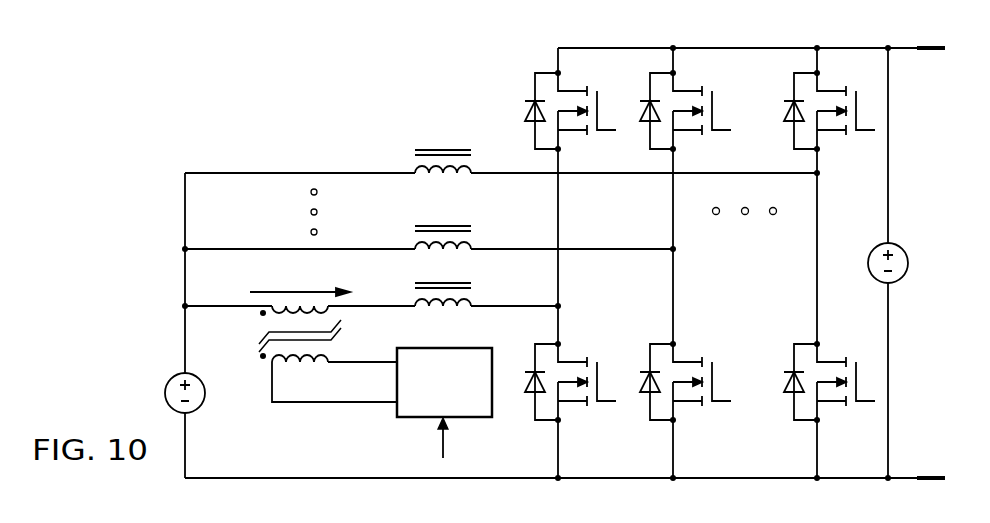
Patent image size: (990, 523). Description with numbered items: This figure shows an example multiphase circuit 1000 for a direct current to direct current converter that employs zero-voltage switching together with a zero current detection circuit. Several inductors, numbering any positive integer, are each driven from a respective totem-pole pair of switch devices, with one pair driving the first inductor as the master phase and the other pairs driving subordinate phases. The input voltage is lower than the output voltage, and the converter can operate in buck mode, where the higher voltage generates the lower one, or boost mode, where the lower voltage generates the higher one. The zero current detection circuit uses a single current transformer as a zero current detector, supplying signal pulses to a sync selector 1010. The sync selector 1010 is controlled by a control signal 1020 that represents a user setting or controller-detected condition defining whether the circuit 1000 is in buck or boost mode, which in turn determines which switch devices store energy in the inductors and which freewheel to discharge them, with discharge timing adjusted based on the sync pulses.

The multiphase circuit 1000 is at (283, 101).
The sync selector 1010 is at (414, 418).
The control signal 1020 is at (444, 441).